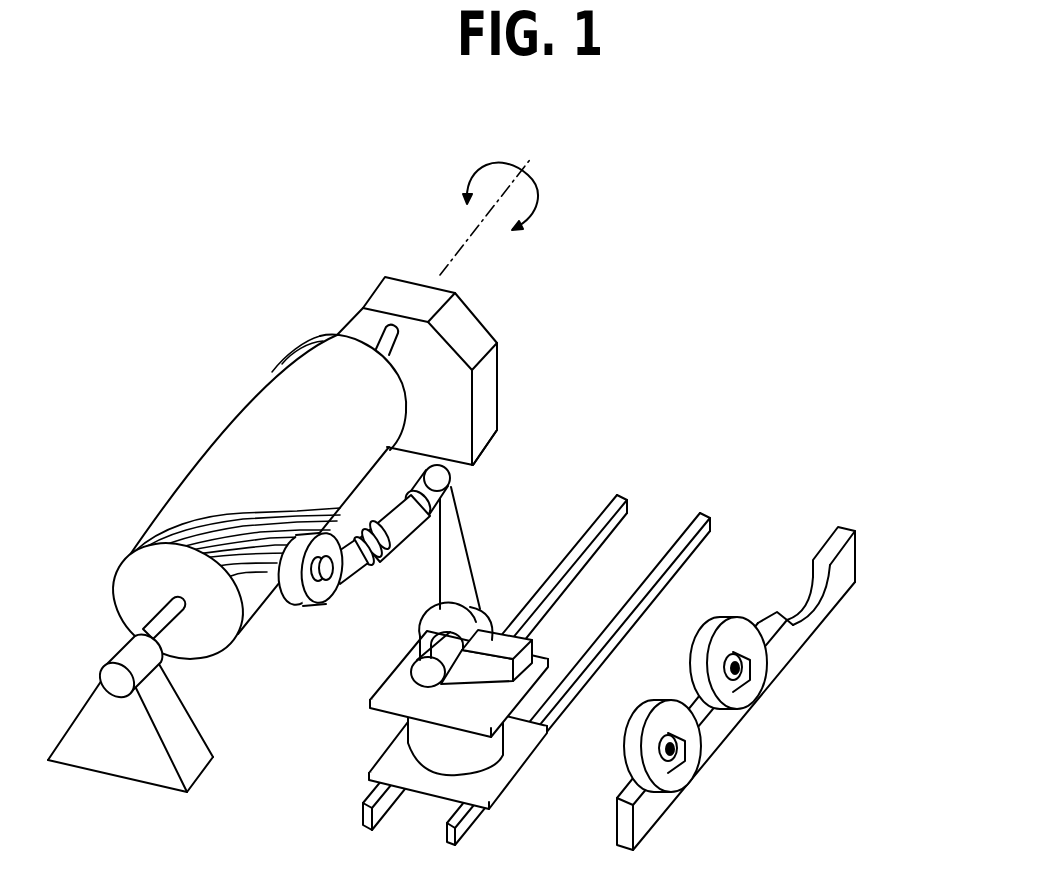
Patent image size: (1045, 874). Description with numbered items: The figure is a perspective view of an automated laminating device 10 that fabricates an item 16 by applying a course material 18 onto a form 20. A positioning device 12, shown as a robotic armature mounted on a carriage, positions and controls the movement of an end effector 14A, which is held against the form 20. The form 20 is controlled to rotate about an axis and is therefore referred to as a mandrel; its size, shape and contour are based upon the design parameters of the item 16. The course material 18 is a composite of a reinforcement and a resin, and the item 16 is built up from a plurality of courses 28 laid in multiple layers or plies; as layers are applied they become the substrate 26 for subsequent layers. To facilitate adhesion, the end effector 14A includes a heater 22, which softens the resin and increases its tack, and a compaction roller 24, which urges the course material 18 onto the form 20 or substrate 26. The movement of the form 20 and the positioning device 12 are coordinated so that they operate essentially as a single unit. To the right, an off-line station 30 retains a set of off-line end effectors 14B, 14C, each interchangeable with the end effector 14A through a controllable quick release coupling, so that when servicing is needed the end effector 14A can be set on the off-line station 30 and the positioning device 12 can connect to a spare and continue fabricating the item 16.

The laminating device 10 is at (641, 306).
The positioning device 12 is at (483, 538).
The end effector 14A is at (297, 602).
The off-line end effector 14B is at (748, 693).
The off-line end effector 14C is at (687, 777).
The item 16 is at (301, 395).
The course material 18 is at (202, 507).
The form 20 is at (128, 597).
The heater 22 is at (748, 676).
The compaction roller 24 is at (743, 655).
The substrate 26 is at (283, 476).
The courses 28 is at (190, 519).
The off-line station 30 is at (858, 557).